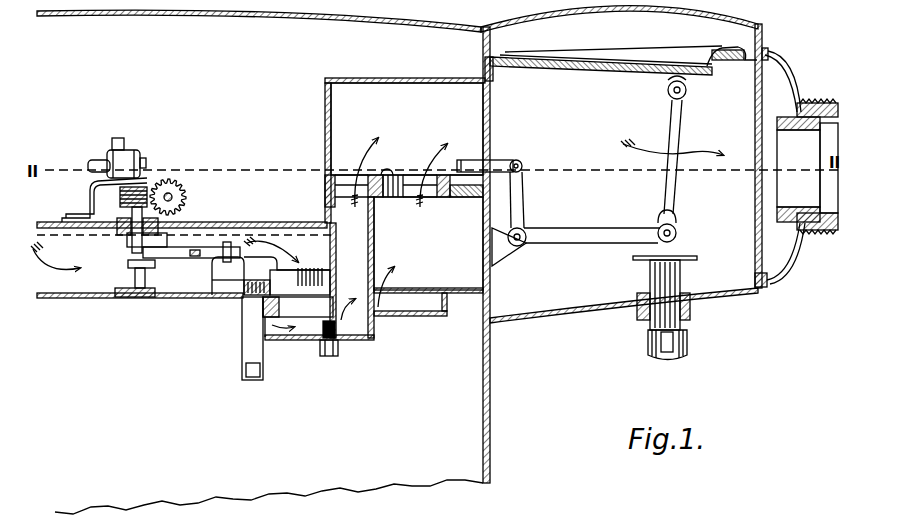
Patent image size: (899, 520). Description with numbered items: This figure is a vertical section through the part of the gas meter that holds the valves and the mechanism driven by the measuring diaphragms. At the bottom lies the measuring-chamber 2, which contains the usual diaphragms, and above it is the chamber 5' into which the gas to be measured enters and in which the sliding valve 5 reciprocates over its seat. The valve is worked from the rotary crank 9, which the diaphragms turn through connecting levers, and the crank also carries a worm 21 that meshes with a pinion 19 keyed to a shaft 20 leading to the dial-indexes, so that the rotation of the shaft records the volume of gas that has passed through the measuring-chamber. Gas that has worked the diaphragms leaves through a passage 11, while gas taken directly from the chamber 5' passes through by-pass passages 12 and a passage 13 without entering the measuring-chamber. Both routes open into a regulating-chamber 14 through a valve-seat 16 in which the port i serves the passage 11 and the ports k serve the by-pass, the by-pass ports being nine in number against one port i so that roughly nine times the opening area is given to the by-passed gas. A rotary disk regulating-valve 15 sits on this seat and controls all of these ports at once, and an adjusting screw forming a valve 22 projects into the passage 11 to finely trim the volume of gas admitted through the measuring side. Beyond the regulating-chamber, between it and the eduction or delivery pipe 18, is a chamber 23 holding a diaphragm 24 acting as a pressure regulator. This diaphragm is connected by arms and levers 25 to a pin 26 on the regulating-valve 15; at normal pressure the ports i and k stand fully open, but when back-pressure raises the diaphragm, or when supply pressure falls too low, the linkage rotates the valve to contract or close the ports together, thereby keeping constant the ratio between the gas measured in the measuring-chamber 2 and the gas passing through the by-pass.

The measuring-chamber 2 is at (260, 262).
The sliding valve 5 is at (271, 266).
The chamber 5' is at (66, 255).
The rotary crank 9 is at (156, 262).
The passage 11 is at (301, 343).
The passage 12 is at (398, 306).
The passage 13 is at (428, 252).
The regulating-chamber 14 is at (407, 129).
The regulating-valve 15 is at (335, 173).
The valve-seat 16 is at (397, 199).
The eduction or delivery pipe 18 is at (801, 167).
The pinion 19 is at (187, 197).
The shaft 20 is at (170, 192).
The worm 21 is at (119, 200).
The valve 22 is at (328, 356).
The chamber 23 is at (607, 197).
The diaphragm 24 is at (643, 73).
The arms and levers 25 is at (497, 161).
The pin 26 is at (690, 345).
The port i is at (358, 183).
The ports k is at (431, 187).